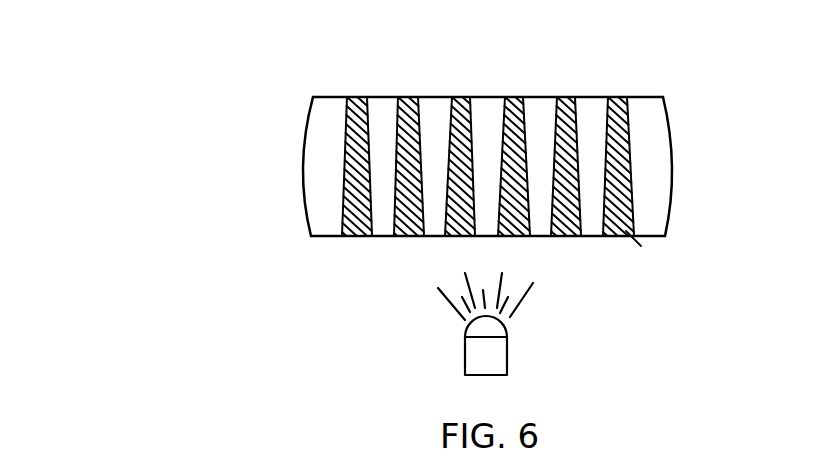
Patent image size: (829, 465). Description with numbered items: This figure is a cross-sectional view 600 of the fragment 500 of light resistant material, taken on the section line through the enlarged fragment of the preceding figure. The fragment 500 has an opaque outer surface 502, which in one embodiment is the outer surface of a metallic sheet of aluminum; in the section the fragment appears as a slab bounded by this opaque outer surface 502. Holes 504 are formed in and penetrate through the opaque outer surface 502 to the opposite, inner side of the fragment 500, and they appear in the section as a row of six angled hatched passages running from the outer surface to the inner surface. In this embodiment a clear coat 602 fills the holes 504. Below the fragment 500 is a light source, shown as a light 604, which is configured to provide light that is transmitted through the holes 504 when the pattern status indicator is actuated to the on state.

The cross-sectional view 600 is at (183, 114).
The fragment 500 is at (308, 228).
The opaque outer surface 502 is at (545, 97).
The holes 504 is at (393, 197).
The clear coat 602 is at (355, 222).
The light 604 is at (487, 330).